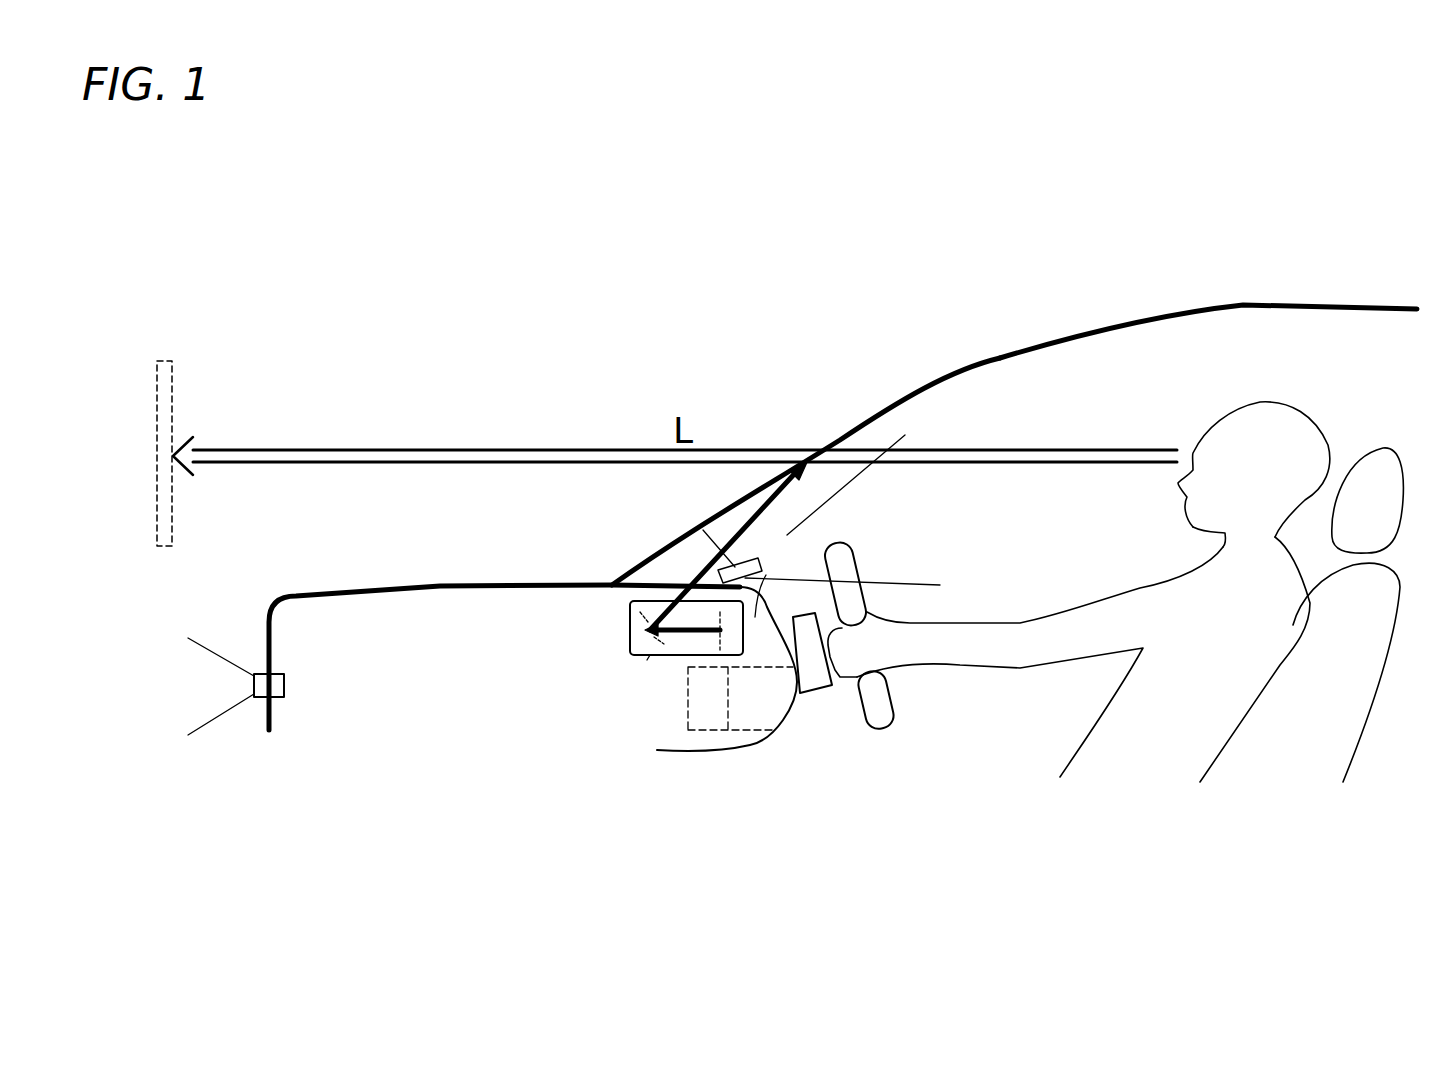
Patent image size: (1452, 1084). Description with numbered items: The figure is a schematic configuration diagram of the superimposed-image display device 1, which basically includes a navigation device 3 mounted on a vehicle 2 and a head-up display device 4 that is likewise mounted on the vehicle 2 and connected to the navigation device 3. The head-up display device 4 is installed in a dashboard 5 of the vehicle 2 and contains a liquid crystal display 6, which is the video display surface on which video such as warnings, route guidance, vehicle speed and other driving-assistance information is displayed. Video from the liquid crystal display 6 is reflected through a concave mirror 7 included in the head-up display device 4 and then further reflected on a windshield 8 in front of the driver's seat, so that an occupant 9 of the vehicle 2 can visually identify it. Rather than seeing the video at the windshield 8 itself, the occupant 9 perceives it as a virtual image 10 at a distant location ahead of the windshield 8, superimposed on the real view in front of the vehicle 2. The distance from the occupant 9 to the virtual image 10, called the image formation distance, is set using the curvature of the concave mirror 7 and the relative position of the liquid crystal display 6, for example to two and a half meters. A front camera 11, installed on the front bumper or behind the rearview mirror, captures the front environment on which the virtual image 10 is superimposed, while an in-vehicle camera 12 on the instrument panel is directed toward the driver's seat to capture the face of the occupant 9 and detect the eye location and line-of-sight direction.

The superimposed-image display device 1 is at (703, 300).
The vehicle 2 is at (1247, 303).
The navigation device 3 is at (760, 710).
The head-up display device 4 is at (628, 633).
The dashboard 5 is at (766, 575).
The liquid crystal display 6 is at (721, 660).
The concave mirror 7 is at (645, 663).
The windshield 8 is at (860, 428).
The occupant 9 is at (1287, 420).
The virtual image 10 is at (172, 350).
The front camera 11 is at (260, 690).
The in-vehicle camera 12 is at (724, 551).